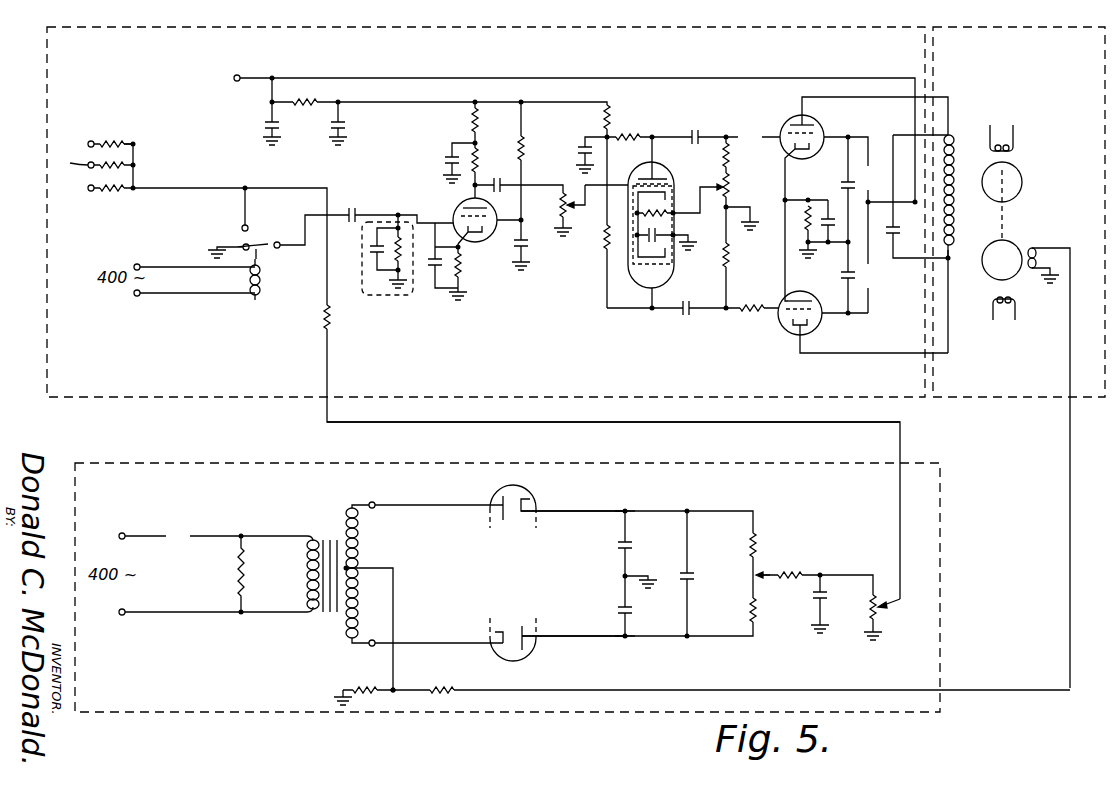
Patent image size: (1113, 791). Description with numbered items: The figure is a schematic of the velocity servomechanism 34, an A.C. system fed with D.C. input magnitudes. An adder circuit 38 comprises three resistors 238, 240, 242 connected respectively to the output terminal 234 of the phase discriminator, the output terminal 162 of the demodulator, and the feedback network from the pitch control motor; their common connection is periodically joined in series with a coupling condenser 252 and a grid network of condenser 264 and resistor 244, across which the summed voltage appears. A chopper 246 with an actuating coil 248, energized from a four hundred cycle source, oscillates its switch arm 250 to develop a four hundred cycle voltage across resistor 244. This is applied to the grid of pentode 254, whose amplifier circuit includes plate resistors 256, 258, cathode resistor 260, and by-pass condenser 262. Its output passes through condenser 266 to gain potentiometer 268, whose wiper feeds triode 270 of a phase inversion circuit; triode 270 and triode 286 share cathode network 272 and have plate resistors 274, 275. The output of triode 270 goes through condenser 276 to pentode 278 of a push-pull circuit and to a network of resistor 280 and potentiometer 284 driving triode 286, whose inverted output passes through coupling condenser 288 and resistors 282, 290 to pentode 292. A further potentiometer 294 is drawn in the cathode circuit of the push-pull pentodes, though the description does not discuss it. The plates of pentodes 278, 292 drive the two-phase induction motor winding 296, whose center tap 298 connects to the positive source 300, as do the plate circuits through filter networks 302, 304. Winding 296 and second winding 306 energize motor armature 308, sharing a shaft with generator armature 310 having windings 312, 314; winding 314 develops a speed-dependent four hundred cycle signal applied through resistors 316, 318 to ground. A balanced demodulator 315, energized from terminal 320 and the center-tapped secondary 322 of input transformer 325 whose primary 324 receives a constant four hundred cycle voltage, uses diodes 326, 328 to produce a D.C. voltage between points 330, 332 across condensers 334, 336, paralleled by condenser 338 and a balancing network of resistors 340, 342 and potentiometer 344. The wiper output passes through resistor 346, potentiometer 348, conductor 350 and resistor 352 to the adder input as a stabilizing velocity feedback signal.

The velocity servomechanism 34 is at (535, 64).
The adder circuit 38 is at (138, 121).
The output terminal of the demodulator 162 is at (63, 160).
The output terminal of the phase discriminator 234 is at (90, 141).
The resistor 238 is at (121, 143).
The resistor 240 is at (121, 165).
The resistor 242 is at (113, 192).
The resistor 244 is at (402, 262).
The chopper 246 is at (262, 250).
The actuating coil 248 is at (253, 300).
The double throw single pole switch 250 is at (257, 240).
The coupling condenser 252 is at (353, 208).
The pentode 254 is at (493, 240).
The plate resistor 256 is at (470, 121).
The plate resistor 258 is at (480, 163).
The cathode resistor 260 is at (462, 282).
The by-pass condenser 262 is at (435, 290).
The condenser 264 is at (375, 255).
The condenser 266 is at (505, 182).
The potentiometer 268 is at (562, 232).
The triode 270 is at (661, 178).
The cathode network 272 is at (670, 210).
The plate resistor 274 is at (640, 128).
The plate resistor 275 is at (606, 252).
The condenser 276 is at (695, 134).
The pentode 278 is at (792, 118).
The resistor 280 is at (731, 155).
The resistor 282 is at (723, 258).
The potentiometer 284 is at (730, 185).
The triode 286 is at (662, 278).
The coupling condenser 288 is at (686, 313).
The resistor 290 is at (752, 312).
The pentode 292 is at (823, 317).
The potentiometer 294 is at (811, 208).
The two-phase induction motor winding 296 is at (951, 165).
The center tap 298 is at (945, 245).
The source of positive voltage 300 is at (241, 77).
The filter network 302 is at (605, 118).
The filter network 304 is at (308, 108).
The second winding 306 is at (1006, 128).
The motor armature 308 is at (1013, 172).
The generator armature 310 is at (1013, 250).
The winding 312 is at (1003, 321).
The winding 314 is at (1052, 272).
The balanced demodulator 315 is at (468, 587).
The resistor 316 is at (442, 696).
The resistor 318 is at (358, 697).
The terminal 320 is at (396, 686).
The center-tapped secondary 322 is at (360, 553).
The primary 324 is at (300, 574).
The input transformer 325 is at (328, 606).
The diode 326 is at (523, 515).
The diode 328 is at (515, 615).
The point 330 is at (628, 511).
The point 332 is at (627, 640).
The condenser 334 is at (633, 545).
The condenser 336 is at (633, 610).
The condenser 338 is at (690, 573).
The resistor 340 is at (757, 541).
The resistor 342 is at (756, 622).
The potentiometer 344 is at (766, 570).
The resistor 346 is at (800, 573).
The potentiometer 348 is at (882, 610).
The conductor 350 is at (690, 424).
The resistor 352 is at (325, 328).